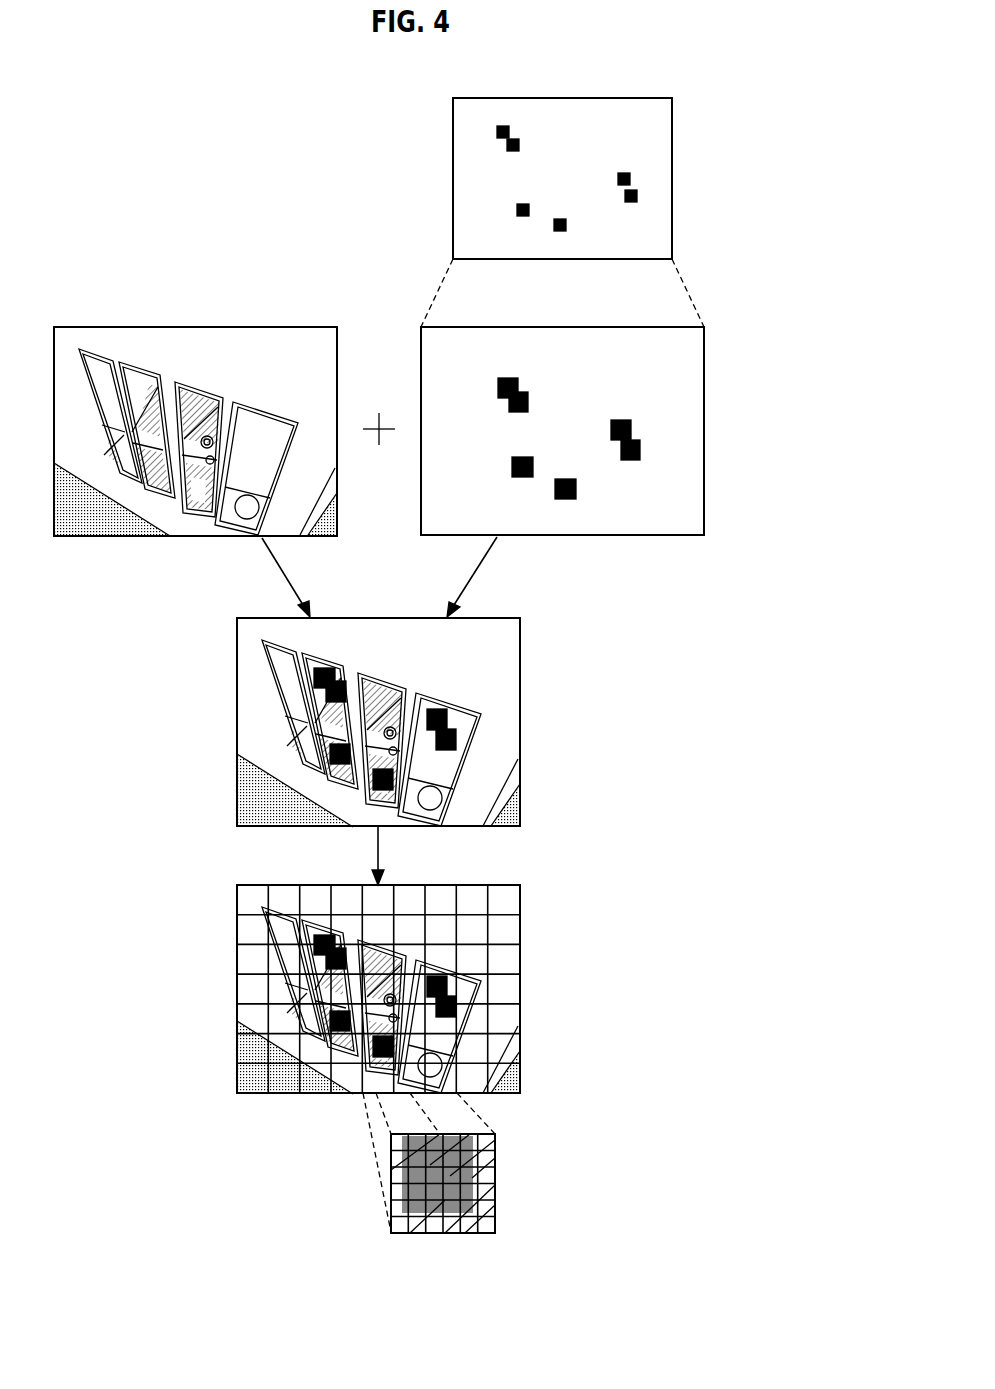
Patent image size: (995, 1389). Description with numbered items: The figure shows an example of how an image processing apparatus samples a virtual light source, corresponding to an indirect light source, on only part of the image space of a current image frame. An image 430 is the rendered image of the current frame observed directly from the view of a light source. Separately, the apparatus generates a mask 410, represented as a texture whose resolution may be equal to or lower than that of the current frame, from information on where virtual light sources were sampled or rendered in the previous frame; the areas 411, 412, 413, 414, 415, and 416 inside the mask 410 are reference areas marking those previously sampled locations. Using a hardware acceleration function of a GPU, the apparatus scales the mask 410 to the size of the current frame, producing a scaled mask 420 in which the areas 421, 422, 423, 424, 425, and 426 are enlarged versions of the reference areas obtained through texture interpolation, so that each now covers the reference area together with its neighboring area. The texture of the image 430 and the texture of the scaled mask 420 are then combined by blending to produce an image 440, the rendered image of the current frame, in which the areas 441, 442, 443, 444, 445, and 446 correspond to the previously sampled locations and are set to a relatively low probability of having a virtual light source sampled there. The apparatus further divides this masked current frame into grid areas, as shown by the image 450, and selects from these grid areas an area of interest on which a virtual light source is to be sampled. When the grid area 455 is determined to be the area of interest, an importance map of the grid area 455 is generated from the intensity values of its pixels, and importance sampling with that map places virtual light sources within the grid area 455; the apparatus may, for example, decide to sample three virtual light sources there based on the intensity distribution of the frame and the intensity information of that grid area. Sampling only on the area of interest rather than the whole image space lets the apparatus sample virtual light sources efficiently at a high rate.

The mask 410 is at (563, 98).
The area 411 is at (501, 130).
The area 412 is at (510, 145).
The area 413 is at (520, 208).
The area 414 is at (559, 230).
The area 415 is at (634, 197).
The area 416 is at (628, 178).
The scaled mask 420 is at (606, 327).
The area 421 is at (500, 388).
The area 422 is at (519, 410).
The area 423 is at (522, 476).
The area 424 is at (562, 500).
The area 425 is at (641, 451).
The area 426 is at (630, 430).
The image 430 is at (195, 327).
The image 440 is at (372, 618).
The area 441 is at (316, 678).
The area 442 is at (336, 702).
The area 443 is at (340, 765).
The area 444 is at (392, 780).
The area 445 is at (446, 750).
The area 446 is at (437, 710).
The image 450 is at (477, 885).
The grid area 455 is at (375, 1063).